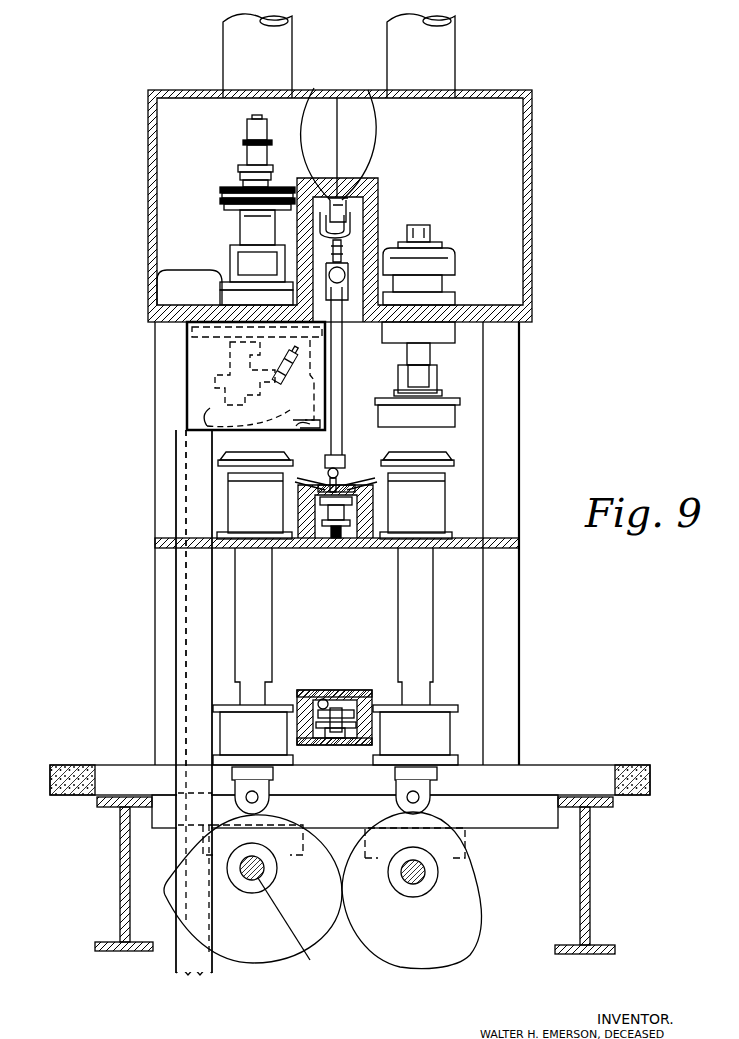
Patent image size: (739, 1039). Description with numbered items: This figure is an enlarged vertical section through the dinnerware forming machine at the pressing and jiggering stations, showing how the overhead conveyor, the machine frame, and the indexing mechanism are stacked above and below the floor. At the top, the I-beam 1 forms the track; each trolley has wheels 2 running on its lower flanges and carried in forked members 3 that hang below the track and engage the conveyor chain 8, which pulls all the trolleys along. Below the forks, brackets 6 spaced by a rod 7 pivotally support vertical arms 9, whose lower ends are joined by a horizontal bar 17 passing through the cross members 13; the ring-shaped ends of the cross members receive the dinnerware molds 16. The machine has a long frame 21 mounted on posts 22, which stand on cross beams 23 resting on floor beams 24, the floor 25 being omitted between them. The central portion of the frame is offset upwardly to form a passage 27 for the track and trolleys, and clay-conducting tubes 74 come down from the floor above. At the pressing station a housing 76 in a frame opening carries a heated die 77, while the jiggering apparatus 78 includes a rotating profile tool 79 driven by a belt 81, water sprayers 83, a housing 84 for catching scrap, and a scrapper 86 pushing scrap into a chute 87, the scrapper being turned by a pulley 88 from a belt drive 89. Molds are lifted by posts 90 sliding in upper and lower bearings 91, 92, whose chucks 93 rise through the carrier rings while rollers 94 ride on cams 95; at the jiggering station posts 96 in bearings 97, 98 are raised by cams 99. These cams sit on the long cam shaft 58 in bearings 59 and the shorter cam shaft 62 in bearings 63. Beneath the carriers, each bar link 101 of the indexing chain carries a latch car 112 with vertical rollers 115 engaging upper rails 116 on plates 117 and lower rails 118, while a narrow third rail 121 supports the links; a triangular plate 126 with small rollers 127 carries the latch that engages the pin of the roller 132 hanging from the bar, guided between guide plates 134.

The I-beam track 1 is at (319, 133).
The wheels 2 is at (359, 137).
The forked members 3 is at (350, 228).
The brackets 6 is at (328, 267).
The rod 7 is at (345, 278).
The conveyor chain 8 is at (390, 258).
The vertical arms 9 is at (340, 362).
The cross members 13 is at (355, 465).
The dinnerware molds 16 is at (292, 463).
The horizontal bar 17 is at (338, 468).
The frame 21 is at (527, 97).
The posts 22 is at (500, 386).
The cross beams 23 is at (538, 782).
The floor beams 24 is at (120, 868).
The floor 25 is at (50, 778).
The passage 27 is at (348, 205).
The cam shaft 58 is at (285, 943).
The bearings 59 is at (300, 832).
The cam shaft 62 is at (420, 874).
The bearings 63 is at (465, 832).
The clay-conducting tubes 74 is at (395, 33).
The housing 76 is at (440, 335).
The heated die 77 is at (443, 418).
The jiggering apparatus 78 is at (215, 278).
The profile tool 79 is at (222, 395).
The belt 81 is at (225, 190).
The water sprayers 83 is at (205, 413).
The housing 84 is at (205, 425).
The scrapper 86 is at (300, 428).
The chute 87 is at (196, 540).
The pulley 88 is at (203, 340).
The belt drive 89 is at (243, 180).
The posts 90 is at (420, 620).
The upper bearings 91 is at (430, 530).
The lower bearings 92 is at (440, 740).
The chucks 93 is at (437, 480).
The rollers 94 is at (433, 808).
The cams 95 is at (452, 943).
The posts 96 is at (245, 597).
The upper bearings 97 is at (235, 520).
The lower bearings 98 is at (230, 733).
The cams 99 is at (225, 958).
The bar links 101 is at (335, 700).
The latch car 112 is at (355, 540).
The vertical rollers 115 is at (318, 703).
The upper rails 116 is at (360, 522).
The plates 117 is at (305, 540).
The lower rails 118 is at (370, 700).
The third rail 121 is at (335, 540).
The triangular plate 126 is at (325, 745).
The small rollers 127 is at (327, 478).
The roller 132 is at (345, 488).
The guide plates 134 is at (298, 488).